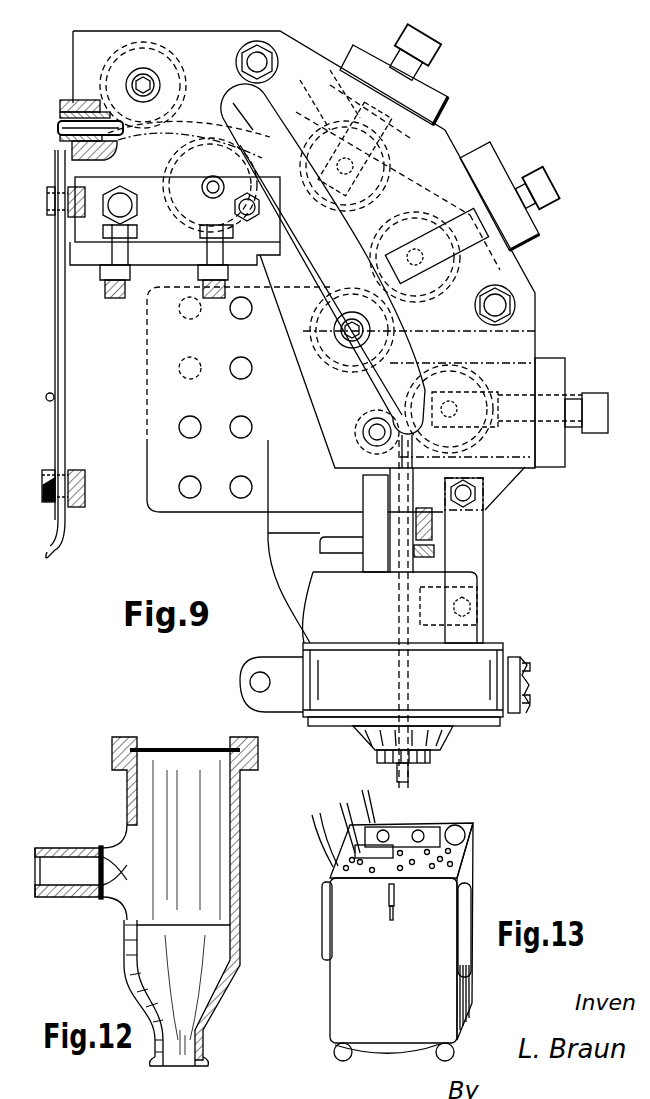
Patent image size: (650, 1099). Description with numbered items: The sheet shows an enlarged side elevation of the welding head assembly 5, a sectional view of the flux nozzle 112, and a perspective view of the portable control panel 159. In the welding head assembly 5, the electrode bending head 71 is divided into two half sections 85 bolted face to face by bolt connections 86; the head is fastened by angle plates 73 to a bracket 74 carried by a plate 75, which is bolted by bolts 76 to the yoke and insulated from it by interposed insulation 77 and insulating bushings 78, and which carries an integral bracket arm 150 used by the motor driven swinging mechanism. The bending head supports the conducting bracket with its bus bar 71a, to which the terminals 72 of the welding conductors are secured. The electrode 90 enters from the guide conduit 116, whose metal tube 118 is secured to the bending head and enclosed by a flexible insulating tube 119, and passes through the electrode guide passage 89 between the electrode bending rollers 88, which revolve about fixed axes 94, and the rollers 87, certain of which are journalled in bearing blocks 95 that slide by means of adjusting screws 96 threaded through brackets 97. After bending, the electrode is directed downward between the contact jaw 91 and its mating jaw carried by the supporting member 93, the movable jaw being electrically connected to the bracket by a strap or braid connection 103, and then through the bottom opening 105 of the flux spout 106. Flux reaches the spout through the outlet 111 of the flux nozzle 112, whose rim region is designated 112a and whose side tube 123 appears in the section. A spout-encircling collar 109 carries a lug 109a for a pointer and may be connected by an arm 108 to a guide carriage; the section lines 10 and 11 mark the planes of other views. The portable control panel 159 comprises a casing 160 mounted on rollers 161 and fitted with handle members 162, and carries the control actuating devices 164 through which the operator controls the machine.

In FIG. 9, the welding head assembly 5 is at (235, 532).
In FIG. 9, the section line 10 is at (140, 15).
In FIG. 9, the section line 11 is at (300, 598).
In FIG. 9, the electrode bending head 71 is at (548, 300).
In FIG. 9, the bus bar 71a is at (168, 505).
In FIG. 9, the terminals 72 is at (150, 184).
In FIG. 9, the angle plates 73 is at (203, 290).
In FIG. 9, the bracket 74 is at (130, 445).
In FIG. 9, the plate 75 is at (65, 377).
In FIG. 9, the bolts 76 is at (78, 470).
In FIG. 9, the insulation 77 is at (54, 397).
In FIG. 9, the insulating bushing 78 is at (55, 217).
In FIG. 9, the half sections 85 is at (390, 159).
In FIG. 9, the bolt connections 86 is at (247, 63).
In FIG. 9, the electrode bending rollers 87 is at (320, 148).
In FIG. 9, the electrode bending rollers 88 is at (167, 68).
In FIG. 9, the electrode guide passage 89 is at (205, 125).
In FIG. 9, the electrode 90 is at (350, 240).
In FIG. 9, the contact jaw 91 is at (432, 522).
In FIG. 9, the supporting member 93 is at (363, 495).
In FIG. 9, the fixed axes 94 is at (148, 82).
In FIG. 9, the bearing blocks 95 is at (340, 140).
In FIG. 9, the adjusting screws 96 is at (437, 48).
In FIG. 9, the brackets 97 is at (446, 98).
In FIG. 9, the strap or braid connection 103 is at (478, 553).
In FIG. 9, the bottom opening 105 is at (432, 760).
In FIG. 9, the flux spout 106 is at (448, 740).
In FIG. 9, the arm 108 is at (534, 657).
In FIG. 9, the spout-encircling collar 109 is at (490, 655).
In FIG. 9, the lug 109a is at (248, 657).
In FIG. 12, the outlet 111 is at (205, 1042).
In FIG. 12, the flux nozzle 112 is at (243, 797).
In FIG. 12, the bottle rim seal 112a is at (182, 745).
In FIG. 9, the guide conduit 116 is at (64, 100).
In FIG. 9, the metal tube 118 is at (84, 190).
In FIG. 9, the flexible insulating tube 119 is at (74, 108).
In FIG. 12, the side tube 123 is at (116, 840).
In FIG. 9, the bracket arm 150 is at (69, 540).
In FIG. 13, the portable control panel 159 is at (326, 982).
In FIG. 13, the casing 160 is at (432, 990).
In FIG. 13, the rollers 161 is at (398, 1053).
In FIG. 13, the handle members 162 is at (322, 912).
In FIG. 13, the control actuating devices 164 is at (334, 871).